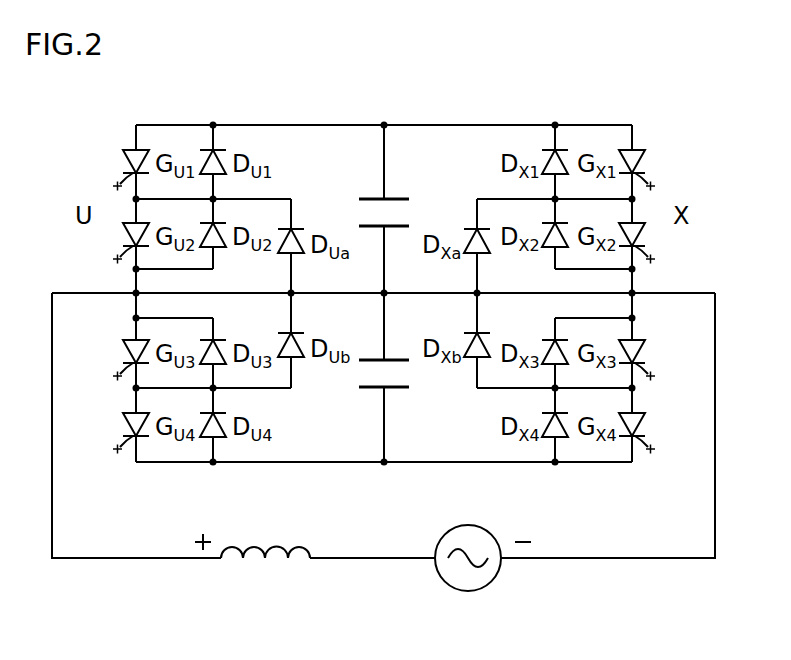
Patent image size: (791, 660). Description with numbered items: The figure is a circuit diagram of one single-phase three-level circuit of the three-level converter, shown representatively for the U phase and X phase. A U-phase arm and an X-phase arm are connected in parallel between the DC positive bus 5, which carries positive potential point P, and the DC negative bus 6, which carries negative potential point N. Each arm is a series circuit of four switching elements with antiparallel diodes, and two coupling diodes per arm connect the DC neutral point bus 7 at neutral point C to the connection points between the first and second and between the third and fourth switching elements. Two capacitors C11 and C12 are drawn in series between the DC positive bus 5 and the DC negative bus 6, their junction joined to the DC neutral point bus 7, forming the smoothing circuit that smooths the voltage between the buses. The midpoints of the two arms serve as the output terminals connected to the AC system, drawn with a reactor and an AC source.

The DC positive bus 5 is at (415, 125).
The DC negative bus 6 is at (415, 462).
The DC neutral point bus 7 is at (403, 295).
The upper DC capacitor C11 is at (397, 199).
The lower DC capacitor C12 is at (397, 388).